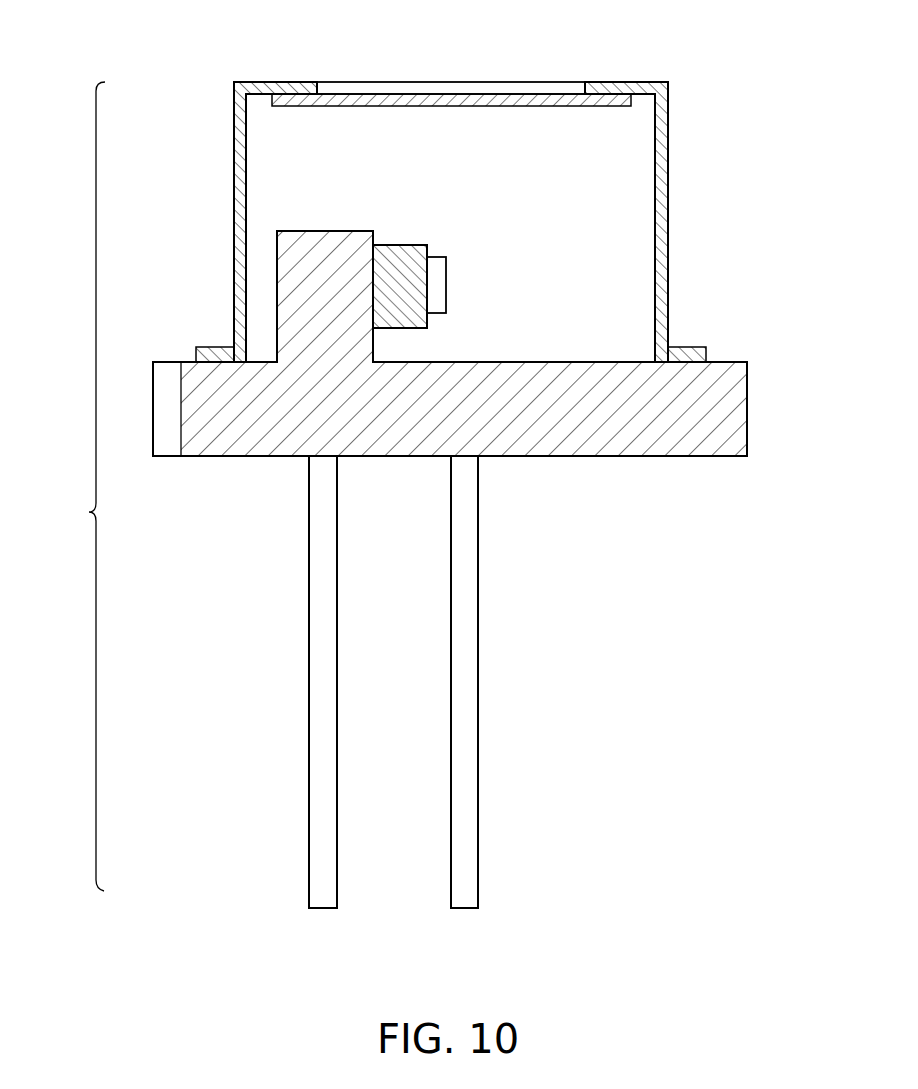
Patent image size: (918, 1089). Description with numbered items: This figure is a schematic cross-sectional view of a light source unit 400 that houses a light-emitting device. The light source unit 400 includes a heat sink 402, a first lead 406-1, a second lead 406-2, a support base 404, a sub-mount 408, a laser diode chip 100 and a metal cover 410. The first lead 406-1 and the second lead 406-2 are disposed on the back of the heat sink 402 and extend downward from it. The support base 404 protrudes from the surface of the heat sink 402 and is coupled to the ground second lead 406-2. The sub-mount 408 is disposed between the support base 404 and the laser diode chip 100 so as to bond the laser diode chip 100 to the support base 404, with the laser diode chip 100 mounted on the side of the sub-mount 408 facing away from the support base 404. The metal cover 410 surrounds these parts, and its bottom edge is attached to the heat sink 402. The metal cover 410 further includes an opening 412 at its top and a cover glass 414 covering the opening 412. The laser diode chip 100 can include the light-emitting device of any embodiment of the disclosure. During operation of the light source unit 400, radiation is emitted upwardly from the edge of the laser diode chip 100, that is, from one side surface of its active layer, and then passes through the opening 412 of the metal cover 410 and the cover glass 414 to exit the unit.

The laser diode chip 100 is at (437, 285).
The light source unit 400 is at (76, 486).
The heat sink 402 is at (664, 446).
The support base 404 is at (288, 286).
The first lead 406-1 is at (464, 709).
The second lead 406-2 is at (323, 705).
The sub-mount 408 is at (400, 252).
The metal cover 410 is at (660, 214).
The opening 412 is at (475, 81).
The cover glass 414 is at (540, 106).